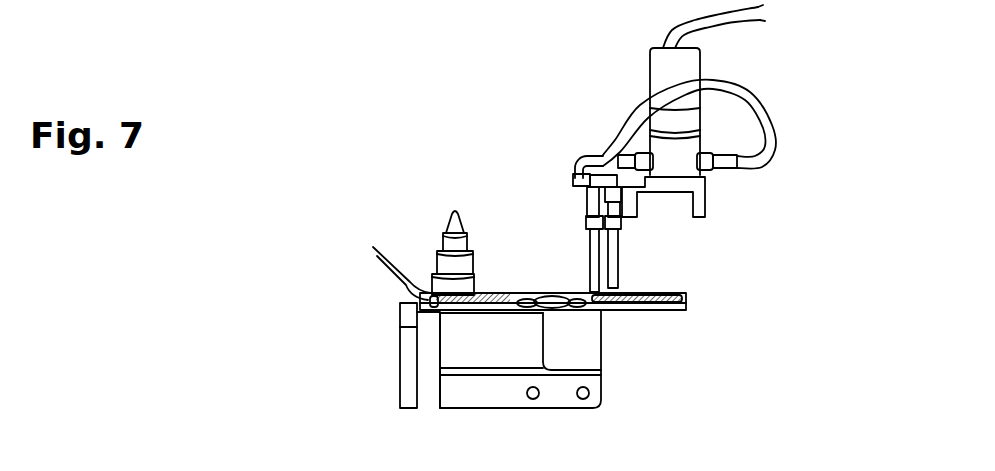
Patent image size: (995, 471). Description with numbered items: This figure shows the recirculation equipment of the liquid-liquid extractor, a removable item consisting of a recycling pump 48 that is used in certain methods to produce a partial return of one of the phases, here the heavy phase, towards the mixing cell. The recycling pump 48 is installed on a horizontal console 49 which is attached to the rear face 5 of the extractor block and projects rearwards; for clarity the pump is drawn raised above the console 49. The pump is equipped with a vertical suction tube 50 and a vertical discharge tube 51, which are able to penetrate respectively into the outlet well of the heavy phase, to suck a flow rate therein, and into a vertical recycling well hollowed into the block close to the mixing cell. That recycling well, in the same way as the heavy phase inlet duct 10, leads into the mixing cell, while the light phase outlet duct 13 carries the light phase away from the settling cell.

The recycling pump 48 is at (773, 94).
The vertical suction tube 50 is at (592, 268).
The vertical discharge tube 51 is at (613, 248).
The horizontal console 49 is at (652, 308).
The rear face 5 is at (606, 356).
The heavy phase inlet duct 10 is at (585, 396).
The light phase outlet duct 13 is at (533, 394).